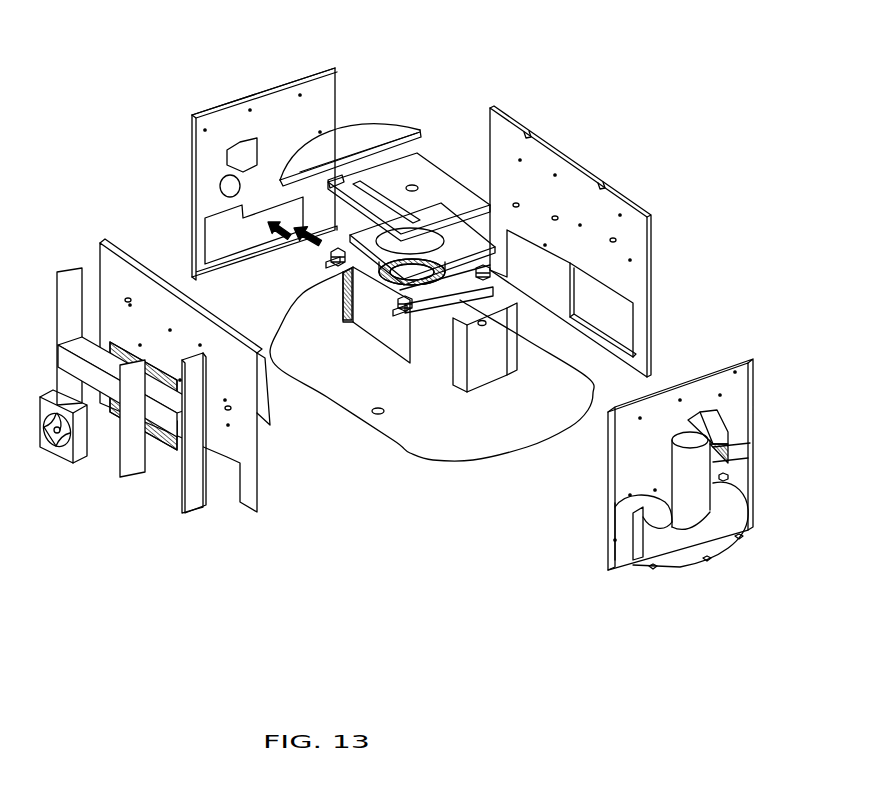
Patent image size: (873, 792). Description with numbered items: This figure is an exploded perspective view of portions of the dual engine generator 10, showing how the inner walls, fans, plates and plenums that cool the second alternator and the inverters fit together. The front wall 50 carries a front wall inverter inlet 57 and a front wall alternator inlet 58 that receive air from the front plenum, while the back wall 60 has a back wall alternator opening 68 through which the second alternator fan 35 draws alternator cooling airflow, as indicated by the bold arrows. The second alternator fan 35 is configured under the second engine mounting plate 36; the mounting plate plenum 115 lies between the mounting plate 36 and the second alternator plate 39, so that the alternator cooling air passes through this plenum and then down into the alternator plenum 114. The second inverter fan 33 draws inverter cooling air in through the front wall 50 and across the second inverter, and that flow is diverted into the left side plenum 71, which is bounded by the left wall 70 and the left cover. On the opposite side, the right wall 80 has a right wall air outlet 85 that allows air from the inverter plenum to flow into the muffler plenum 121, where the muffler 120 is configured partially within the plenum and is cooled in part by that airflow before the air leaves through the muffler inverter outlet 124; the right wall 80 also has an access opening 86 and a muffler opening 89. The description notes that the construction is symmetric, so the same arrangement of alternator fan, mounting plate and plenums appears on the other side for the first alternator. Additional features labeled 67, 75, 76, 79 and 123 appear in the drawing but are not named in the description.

The dual engine generator 10 is at (127, 82).
The second inverter fan 33 is at (55, 440).
The second alternator fan 35 is at (430, 280).
The second engine mounting plate 36 is at (398, 173).
The second alternator plate 39 is at (455, 245).
The front wall 50 is at (105, 265).
The front wall inverter inlet 57 is at (145, 375).
The front wall alternator inlet 58 is at (232, 468).
The back wall 60 is at (502, 123).
The rear opening 67 is at (600, 306).
The back wall alternator opening 68 is at (527, 250).
The left wall 70 is at (211, 116).
The left side plenum 71 is at (256, 103).
The panel cutout 75 is at (222, 243).
The aperture 76 is at (238, 155).
The hole 79 is at (232, 186).
The right wall 80 is at (700, 372).
The right wall air outlet 85 is at (616, 507).
The access opening 86 is at (705, 412).
The muffler opening 89 is at (726, 450).
The alternator plenum 114 is at (366, 320).
The mounting plate plenum 115 is at (335, 243).
The muffler 120 is at (697, 463).
The muffler plenum 121 is at (688, 548).
The duct flange 123 is at (636, 548).
The muffler inverter outlet 124 is at (741, 537).